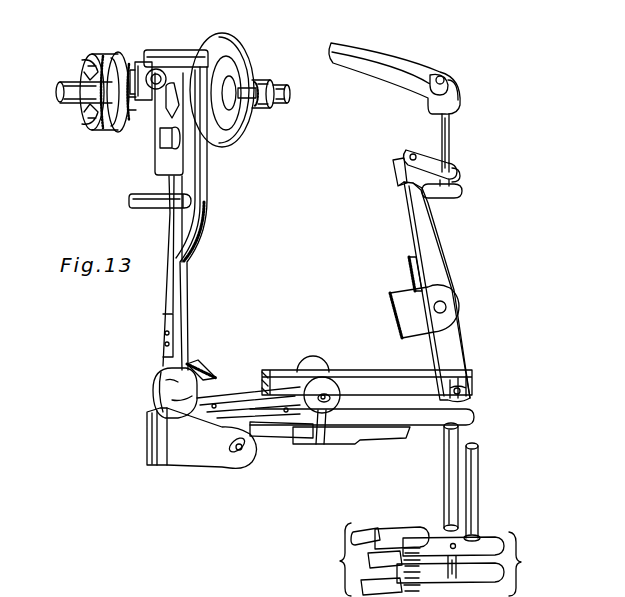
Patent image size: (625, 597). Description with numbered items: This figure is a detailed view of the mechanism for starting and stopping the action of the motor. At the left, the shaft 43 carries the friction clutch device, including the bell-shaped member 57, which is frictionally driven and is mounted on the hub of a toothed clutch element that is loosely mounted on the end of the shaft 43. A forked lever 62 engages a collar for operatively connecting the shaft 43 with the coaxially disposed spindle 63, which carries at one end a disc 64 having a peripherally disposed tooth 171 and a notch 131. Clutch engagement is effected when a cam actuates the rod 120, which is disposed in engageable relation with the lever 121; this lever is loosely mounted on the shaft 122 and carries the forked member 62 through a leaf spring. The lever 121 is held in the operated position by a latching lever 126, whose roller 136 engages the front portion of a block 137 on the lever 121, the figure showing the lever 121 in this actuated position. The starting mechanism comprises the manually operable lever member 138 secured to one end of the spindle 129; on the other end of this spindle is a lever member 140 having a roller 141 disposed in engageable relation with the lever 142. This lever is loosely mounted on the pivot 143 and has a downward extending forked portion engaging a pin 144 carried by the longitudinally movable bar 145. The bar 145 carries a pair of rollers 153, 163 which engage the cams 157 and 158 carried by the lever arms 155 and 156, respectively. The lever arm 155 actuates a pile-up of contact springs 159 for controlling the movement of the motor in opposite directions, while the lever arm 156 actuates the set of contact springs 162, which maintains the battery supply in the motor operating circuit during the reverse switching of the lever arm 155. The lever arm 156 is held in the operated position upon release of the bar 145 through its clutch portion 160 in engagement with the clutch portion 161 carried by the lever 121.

The shaft 43 is at (66, 96).
The bell-shaped member 57 is at (96, 132).
The forked lever 62 is at (155, 165).
The spindle 63 is at (288, 95).
The disc 64 is at (247, 56).
The rod 120 is at (130, 204).
The lever 121 is at (208, 178).
The shaft 122 is at (220, 467).
The latching lever 126 is at (138, 60).
The spindle 129 is at (450, 139).
The notch 131 is at (258, 86).
The roller 136 is at (161, 69).
The block 137 is at (190, 50).
The manually operable lever member 138 is at (402, 90).
The lever member 140 is at (464, 176).
The roller 141 is at (407, 153).
The lever 142 is at (432, 250).
The pivot 143 is at (446, 306).
The pin 144 is at (470, 388).
The longitudinally movable bar 145 is at (403, 380).
The roller 153 is at (320, 355).
The lever arm 155 is at (350, 440).
The lever arm 156 is at (245, 392).
The cam 157 is at (318, 444).
The cam 158 is at (303, 438).
The pile-up of contact springs 159 is at (340, 561).
The clutch portion 160 is at (200, 372).
The clutch portion 161 is at (153, 388).
The contact springs 162 is at (480, 533).
The roller 163 is at (327, 384).
The tooth 171 is at (268, 108).